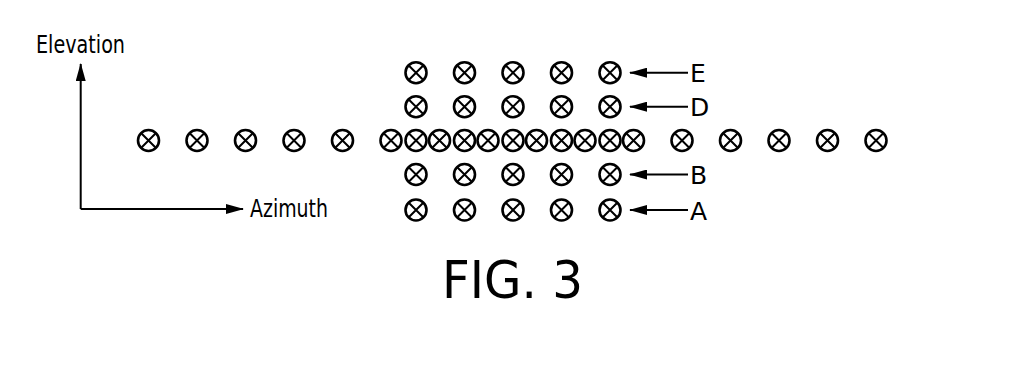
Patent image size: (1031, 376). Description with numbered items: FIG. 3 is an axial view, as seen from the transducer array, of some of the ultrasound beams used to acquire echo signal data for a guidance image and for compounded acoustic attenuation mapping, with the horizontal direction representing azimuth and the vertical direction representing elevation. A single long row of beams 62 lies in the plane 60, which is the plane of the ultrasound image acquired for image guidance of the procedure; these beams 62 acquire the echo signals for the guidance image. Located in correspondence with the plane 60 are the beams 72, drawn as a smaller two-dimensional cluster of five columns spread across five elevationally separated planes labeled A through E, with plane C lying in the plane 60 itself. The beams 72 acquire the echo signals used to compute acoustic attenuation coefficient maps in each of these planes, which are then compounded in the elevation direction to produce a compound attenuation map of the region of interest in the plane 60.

The plane 60 is at (561, 105).
The beams 62 is at (780, 129).
The beams 72 is at (401, 63).